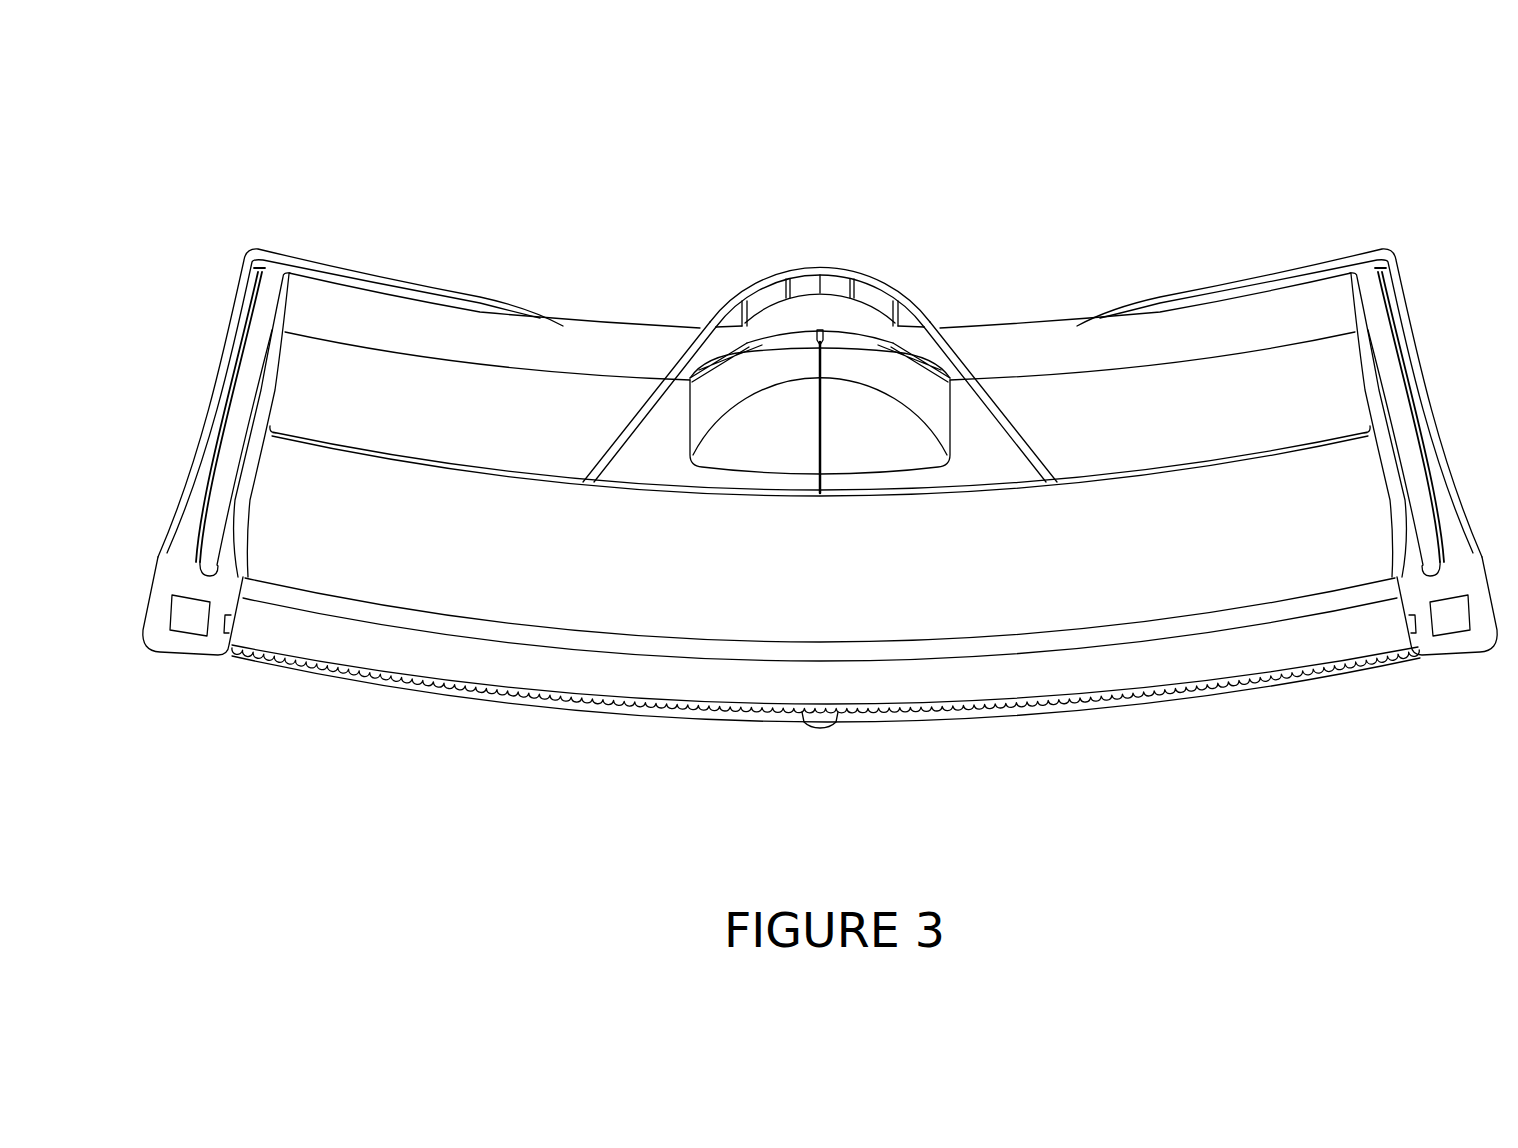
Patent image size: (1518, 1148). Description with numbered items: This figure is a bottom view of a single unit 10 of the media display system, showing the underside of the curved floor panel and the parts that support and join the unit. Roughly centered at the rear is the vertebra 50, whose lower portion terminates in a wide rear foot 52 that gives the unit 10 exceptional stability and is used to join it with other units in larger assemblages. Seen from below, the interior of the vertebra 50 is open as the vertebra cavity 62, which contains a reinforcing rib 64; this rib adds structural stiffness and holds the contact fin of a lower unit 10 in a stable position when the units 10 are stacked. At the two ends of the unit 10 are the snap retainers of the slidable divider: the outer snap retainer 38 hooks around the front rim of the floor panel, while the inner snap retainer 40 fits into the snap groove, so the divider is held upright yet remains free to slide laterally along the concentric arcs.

The unit 10 is at (1227, 206).
The outer snap retainer 38 is at (820, 728).
The inner snap retainer 40 is at (160, 633).
The vertebra 50 is at (712, 308).
The rear foot 52 is at (893, 303).
The vertebra cavity 62 is at (940, 325).
The reinforcing rib 64 is at (819, 377).